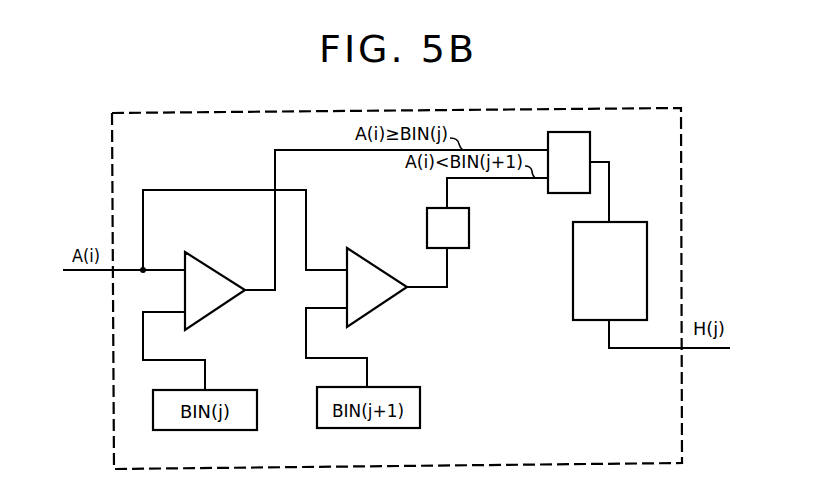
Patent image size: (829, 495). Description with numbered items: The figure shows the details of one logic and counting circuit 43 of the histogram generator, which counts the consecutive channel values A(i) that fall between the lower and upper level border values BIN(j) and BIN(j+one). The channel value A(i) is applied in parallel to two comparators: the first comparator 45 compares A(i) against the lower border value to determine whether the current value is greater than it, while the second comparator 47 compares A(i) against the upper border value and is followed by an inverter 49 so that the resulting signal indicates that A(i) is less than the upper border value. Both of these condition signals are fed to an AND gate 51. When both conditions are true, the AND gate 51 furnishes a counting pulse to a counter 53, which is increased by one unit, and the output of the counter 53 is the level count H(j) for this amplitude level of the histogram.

The logic and counting circuit 43 is at (113, 152).
The comparator 45 is at (214, 314).
The comparator 47 is at (377, 310).
The inverter 49 is at (427, 215).
The AND gate 51 is at (590, 143).
The counter 53 is at (592, 320).